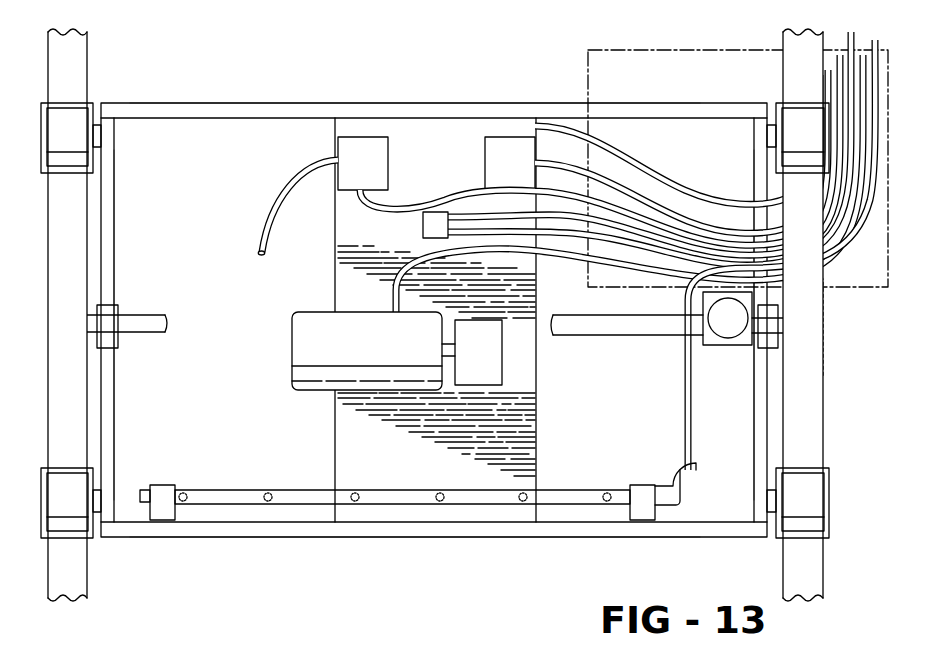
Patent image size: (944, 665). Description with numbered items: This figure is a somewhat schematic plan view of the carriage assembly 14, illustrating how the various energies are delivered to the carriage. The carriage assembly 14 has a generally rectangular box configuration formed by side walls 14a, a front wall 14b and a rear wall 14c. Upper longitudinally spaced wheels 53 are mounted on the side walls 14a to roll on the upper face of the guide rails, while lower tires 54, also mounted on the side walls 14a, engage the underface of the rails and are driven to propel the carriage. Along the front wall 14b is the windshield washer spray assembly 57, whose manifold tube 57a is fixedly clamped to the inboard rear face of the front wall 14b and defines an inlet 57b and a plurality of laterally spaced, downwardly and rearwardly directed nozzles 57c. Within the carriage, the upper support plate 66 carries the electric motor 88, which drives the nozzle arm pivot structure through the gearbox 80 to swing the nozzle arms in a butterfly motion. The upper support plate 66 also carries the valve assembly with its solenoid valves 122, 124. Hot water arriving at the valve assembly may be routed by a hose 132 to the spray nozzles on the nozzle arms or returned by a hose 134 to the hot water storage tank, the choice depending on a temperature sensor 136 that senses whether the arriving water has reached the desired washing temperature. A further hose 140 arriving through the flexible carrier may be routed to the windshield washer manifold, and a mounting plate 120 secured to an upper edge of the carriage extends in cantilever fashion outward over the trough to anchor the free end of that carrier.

The carriage assembly 14 is at (353, 91).
The side walls 14a is at (110, 264).
The front wall 14b is at (330, 537).
The rear wall 14c is at (178, 112).
The upper longitudinally spaced wheels 53 is at (68, 525).
The lower tires 54 is at (68, 380).
The windshield washer spray assembly 57 is at (443, 489).
The manifold tube 57a is at (500, 498).
The inlet 57b is at (684, 500).
The nozzles 57c is at (614, 496).
The upper support plate 66 is at (384, 469).
The gearbox 80 is at (492, 352).
The electric motor 88 is at (292, 358).
The mounting plate 120 is at (588, 76).
The solenoid valve 122 is at (338, 148).
The solenoid valve 124 is at (495, 147).
The hose 132 is at (262, 218).
The hose 134 is at (668, 205).
The temperature sensor 136 is at (423, 225).
The hose 140 is at (686, 404).